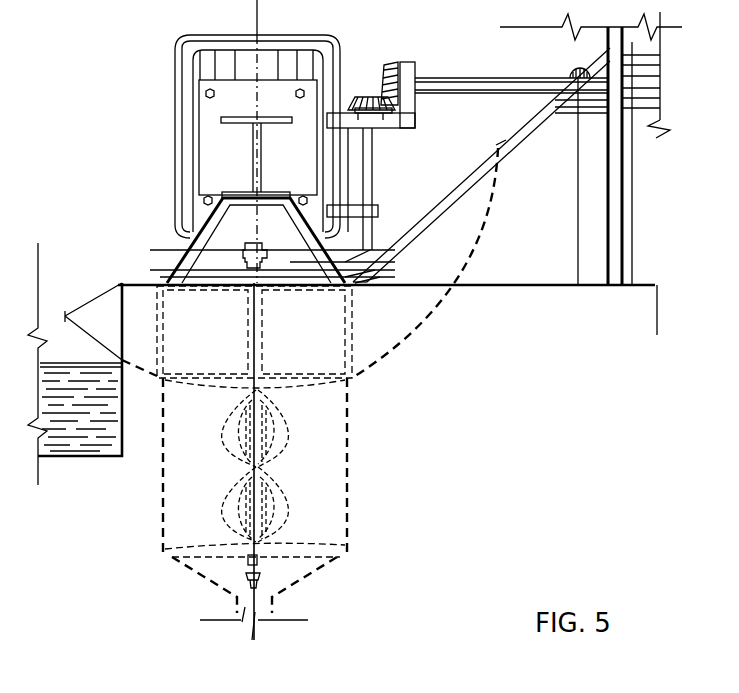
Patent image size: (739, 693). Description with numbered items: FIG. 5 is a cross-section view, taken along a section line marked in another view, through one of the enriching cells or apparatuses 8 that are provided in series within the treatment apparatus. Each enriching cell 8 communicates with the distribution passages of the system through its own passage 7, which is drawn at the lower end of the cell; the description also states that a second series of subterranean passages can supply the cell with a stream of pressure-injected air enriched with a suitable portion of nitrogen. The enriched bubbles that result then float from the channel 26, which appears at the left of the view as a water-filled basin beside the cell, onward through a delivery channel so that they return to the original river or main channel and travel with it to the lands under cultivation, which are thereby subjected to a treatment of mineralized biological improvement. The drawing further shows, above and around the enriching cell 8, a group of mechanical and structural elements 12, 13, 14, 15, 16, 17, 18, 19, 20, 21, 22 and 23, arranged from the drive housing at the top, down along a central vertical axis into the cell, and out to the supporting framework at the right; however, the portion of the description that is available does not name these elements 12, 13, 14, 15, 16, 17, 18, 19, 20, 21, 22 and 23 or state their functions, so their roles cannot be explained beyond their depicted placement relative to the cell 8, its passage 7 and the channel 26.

The passage 7 is at (238, 613).
The enriching cell 8 is at (305, 468).
The motor housing 12 is at (198, 157).
The motor 13 is at (232, 107).
The coupling 14 is at (150, 250).
The shaft 15 is at (254, 348).
The screw conveyor 16 is at (222, 504).
The nozzle 17 is at (248, 560).
The post 18 is at (632, 285).
The rod 19 is at (578, 285).
The strut 20 is at (355, 278).
The swing path 21 is at (480, 243).
The tank edge 22 is at (122, 283).
The pit 23 is at (393, 315).
The channel 26 is at (64, 420).